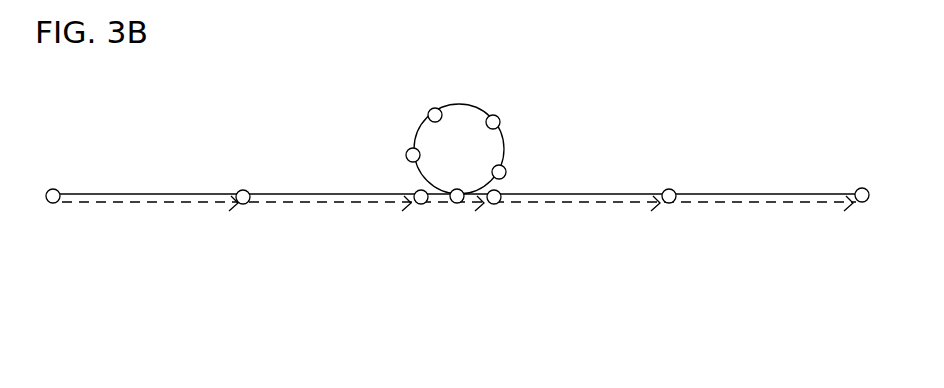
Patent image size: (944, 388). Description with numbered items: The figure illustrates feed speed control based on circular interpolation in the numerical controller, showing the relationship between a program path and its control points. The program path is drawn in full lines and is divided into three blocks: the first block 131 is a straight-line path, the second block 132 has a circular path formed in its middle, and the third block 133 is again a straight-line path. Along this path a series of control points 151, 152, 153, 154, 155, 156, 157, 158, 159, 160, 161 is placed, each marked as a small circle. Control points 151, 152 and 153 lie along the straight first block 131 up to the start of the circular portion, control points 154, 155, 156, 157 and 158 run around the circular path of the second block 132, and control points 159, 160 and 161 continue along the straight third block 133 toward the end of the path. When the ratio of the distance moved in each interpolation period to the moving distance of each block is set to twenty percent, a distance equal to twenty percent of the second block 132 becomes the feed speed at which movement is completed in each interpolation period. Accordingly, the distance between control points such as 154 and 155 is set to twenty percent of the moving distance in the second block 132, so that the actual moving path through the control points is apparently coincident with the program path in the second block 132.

The block 1 131 is at (193, 197).
The block 2 132 is at (438, 200).
The block 3 133 is at (740, 197).
The control point 151 is at (60, 187).
The control point 152 is at (243, 190).
The control point 153 is at (414, 192).
The control point 154 is at (453, 203).
The control point 155 is at (409, 149).
The control point 156 is at (432, 108).
The control point 157 is at (499, 115).
The control point 158 is at (505, 170).
The control point 159 is at (493, 204).
The control point 160 is at (672, 189).
The control point 161 is at (857, 190).